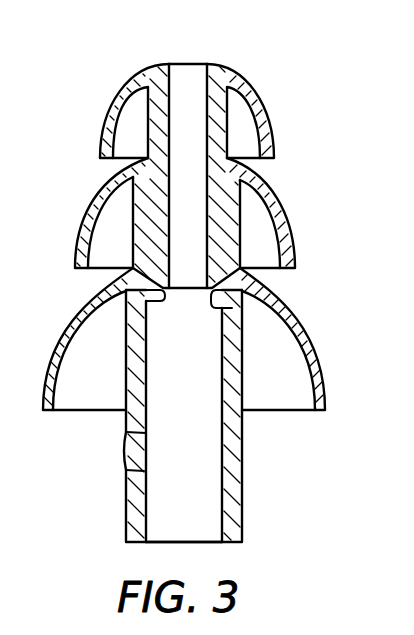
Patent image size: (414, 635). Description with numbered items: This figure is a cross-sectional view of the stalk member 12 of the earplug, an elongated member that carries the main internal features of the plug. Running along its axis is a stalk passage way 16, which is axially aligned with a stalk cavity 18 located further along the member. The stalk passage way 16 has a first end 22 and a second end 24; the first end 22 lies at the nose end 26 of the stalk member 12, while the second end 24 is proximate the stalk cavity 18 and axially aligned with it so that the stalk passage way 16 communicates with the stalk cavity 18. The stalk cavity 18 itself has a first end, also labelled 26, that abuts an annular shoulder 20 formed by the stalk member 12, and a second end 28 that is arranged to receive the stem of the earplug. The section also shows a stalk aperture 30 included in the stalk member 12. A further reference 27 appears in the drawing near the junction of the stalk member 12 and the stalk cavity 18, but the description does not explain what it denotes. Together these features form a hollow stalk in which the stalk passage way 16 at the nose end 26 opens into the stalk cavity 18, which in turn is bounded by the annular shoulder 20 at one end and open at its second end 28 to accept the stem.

The stalk member 12 is at (336, 231).
The stalk passage way 16 is at (187, 75).
The stalk cavity 18 is at (210, 423).
The shoulder 20 is at (232, 306).
The first end 22 is at (207, 64).
The second end 24 is at (163, 287).
The nose end 26 is at (168, 63).
The rib 27 is at (158, 292).
The second end 28 is at (212, 543).
The stalk aperture 30 is at (128, 462).